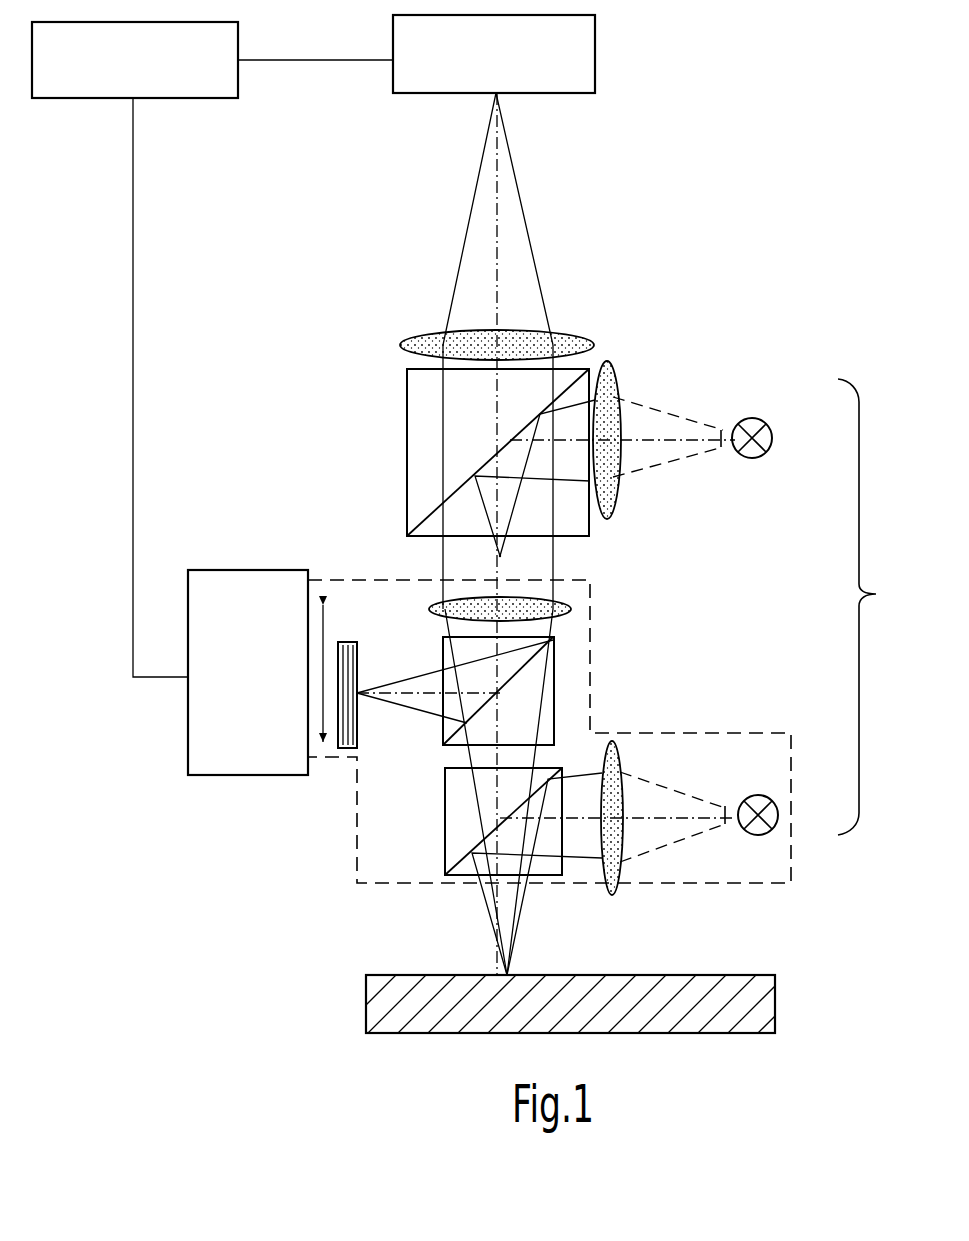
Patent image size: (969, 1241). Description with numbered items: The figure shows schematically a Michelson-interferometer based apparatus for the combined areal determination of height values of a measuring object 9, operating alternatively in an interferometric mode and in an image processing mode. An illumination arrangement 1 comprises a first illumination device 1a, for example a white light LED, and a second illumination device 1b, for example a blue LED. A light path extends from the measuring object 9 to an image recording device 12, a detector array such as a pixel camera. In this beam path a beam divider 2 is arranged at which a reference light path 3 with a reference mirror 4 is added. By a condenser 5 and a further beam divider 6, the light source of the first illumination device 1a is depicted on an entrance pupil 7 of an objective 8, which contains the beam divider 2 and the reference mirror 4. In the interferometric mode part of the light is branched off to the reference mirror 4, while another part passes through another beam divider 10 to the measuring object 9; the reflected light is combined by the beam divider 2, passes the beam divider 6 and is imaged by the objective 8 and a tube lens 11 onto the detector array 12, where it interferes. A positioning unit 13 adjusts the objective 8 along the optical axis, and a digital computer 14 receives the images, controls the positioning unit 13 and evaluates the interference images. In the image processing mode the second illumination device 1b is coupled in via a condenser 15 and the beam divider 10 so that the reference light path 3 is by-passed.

The illumination arrangement 1 is at (865, 607).
The first illumination device 1a is at (770, 432).
The second illumination device 1b is at (778, 808).
The beam divider 2 is at (440, 645).
The reference light path 3 is at (402, 677).
The reference mirror 4 is at (335, 750).
The condenser 5 is at (608, 365).
The beam divider 6 is at (423, 438).
The entrance pupil 7 is at (510, 557).
The objective 8 is at (707, 703).
The measuring object 9 is at (773, 997).
The beam divider 10 is at (542, 863).
The tube lens 11 is at (418, 338).
The image recording device 12 is at (510, 72).
The positioning unit 13 is at (236, 697).
The digital computer 14 is at (148, 78).
The condenser 15 is at (612, 742).